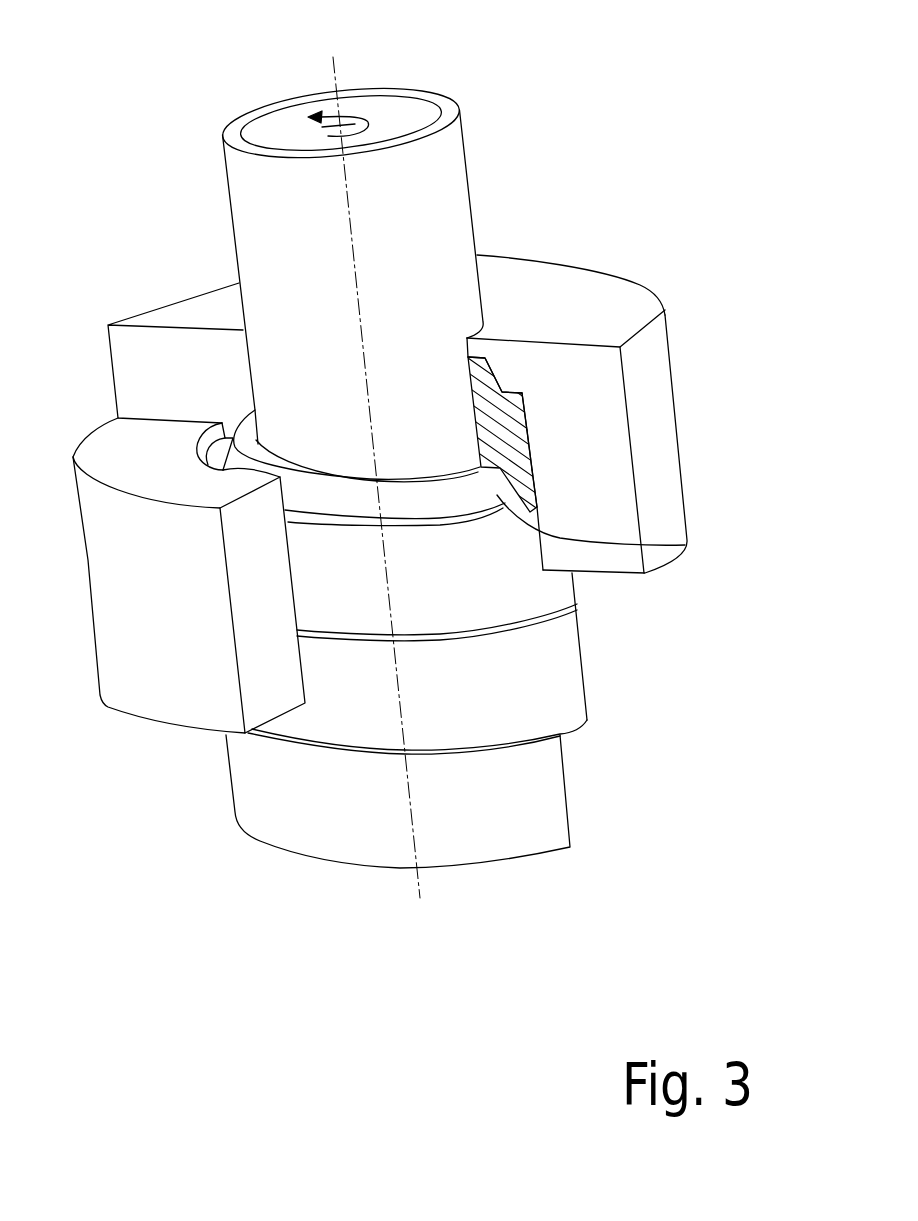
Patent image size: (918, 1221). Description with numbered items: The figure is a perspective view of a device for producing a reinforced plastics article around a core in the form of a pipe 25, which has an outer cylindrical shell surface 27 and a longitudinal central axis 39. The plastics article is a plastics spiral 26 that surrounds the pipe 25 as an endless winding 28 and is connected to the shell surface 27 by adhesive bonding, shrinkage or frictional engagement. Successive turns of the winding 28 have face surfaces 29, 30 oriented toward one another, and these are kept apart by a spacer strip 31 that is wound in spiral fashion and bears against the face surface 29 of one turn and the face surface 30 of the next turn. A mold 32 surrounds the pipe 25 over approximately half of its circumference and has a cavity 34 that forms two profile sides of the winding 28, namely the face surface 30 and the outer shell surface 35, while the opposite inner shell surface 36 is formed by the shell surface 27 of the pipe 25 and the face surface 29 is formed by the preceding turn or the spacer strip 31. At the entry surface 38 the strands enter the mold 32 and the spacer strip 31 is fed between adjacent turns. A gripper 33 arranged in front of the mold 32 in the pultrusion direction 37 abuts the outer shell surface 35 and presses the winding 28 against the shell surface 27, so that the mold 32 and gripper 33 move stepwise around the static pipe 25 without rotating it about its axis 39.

The pipe 25 is at (455, 143).
The plastics spiral 26 is at (288, 878).
The outer cylindrical shell surface 27 is at (493, 827).
The winding 28 is at (552, 590).
The face surface 29 is at (537, 475).
The face surface 30 is at (496, 376).
The spacer strip 31 is at (685, 545).
The mold 32 is at (637, 306).
The gripper 33 is at (143, 695).
The cavity 34 is at (507, 437).
The outer shell surface 35 is at (535, 449).
The inner shell surface 36 is at (473, 401).
The pultrusion direction 37 is at (348, 114).
The entry surface 38 is at (503, 420).
The longitudinal central axis 39 is at (410, 830).